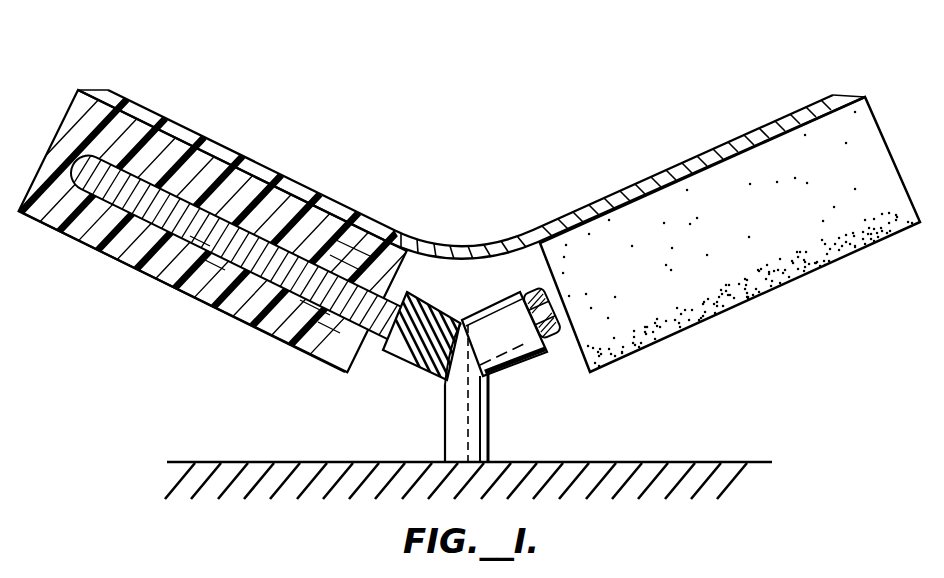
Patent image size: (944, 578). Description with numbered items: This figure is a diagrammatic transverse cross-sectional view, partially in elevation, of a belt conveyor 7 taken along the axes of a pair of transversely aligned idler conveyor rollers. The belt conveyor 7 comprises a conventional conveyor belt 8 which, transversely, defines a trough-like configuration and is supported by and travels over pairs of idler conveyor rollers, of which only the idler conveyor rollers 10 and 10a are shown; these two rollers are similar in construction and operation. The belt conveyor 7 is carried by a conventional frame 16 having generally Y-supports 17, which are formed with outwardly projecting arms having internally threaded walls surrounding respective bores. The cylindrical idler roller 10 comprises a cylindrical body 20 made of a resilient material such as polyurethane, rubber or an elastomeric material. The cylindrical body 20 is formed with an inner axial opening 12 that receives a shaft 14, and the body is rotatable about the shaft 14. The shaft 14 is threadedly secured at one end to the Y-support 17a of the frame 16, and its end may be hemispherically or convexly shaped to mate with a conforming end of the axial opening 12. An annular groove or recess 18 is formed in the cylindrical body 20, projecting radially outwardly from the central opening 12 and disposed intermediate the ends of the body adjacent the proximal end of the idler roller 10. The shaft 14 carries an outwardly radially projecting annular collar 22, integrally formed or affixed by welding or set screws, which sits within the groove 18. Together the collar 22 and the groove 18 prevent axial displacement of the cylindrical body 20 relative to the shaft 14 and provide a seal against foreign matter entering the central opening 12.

The belt conveyor 7 is at (313, 74).
The conveyor belt 8 is at (196, 142).
The idler conveyor roller 10 is at (219, 227).
The idler conveyor roller 10a is at (767, 267).
The inner axial opening 12 is at (235, 314).
The shaft 14 is at (212, 252).
The frame 16 is at (212, 456).
The Y-support 17 is at (472, 430).
The Y-support 17a is at (421, 378).
The annular groove 18 is at (318, 322).
The cylindrical body 20 is at (78, 218).
The collar 22 is at (333, 275).